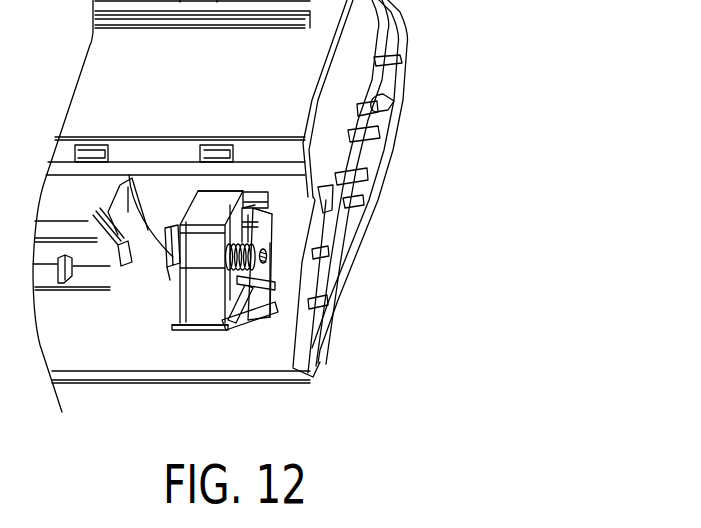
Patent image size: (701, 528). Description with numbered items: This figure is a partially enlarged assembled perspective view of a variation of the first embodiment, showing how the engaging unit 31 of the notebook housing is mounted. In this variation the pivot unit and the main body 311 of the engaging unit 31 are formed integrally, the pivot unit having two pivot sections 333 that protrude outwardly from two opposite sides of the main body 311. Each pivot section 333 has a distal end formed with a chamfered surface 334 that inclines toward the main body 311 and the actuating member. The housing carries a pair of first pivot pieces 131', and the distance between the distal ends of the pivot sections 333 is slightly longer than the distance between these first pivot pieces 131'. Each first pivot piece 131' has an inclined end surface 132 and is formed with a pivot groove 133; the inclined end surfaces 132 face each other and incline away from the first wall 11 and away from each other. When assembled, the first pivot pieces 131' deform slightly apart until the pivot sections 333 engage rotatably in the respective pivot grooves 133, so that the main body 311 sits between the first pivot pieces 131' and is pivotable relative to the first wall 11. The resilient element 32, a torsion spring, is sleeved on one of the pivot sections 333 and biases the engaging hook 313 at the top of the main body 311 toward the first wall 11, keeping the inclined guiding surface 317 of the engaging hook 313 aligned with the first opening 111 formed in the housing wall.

The first wall 11 is at (277, 350).
The first opening 111 is at (252, 192).
The first pivot piece 131' is at (128, 304).
The inclined end surface 132 is at (129, 175).
The pivot groove 133 is at (178, 283).
The engaging unit 31 is at (168, 327).
The main body 311 is at (193, 302).
The engaging hook 313 is at (205, 212).
The inclined guiding surface 317 is at (236, 220).
The resilient element 32 is at (227, 333).
The pivot section 333 is at (172, 232).
The chamfered surface 334 is at (268, 262).